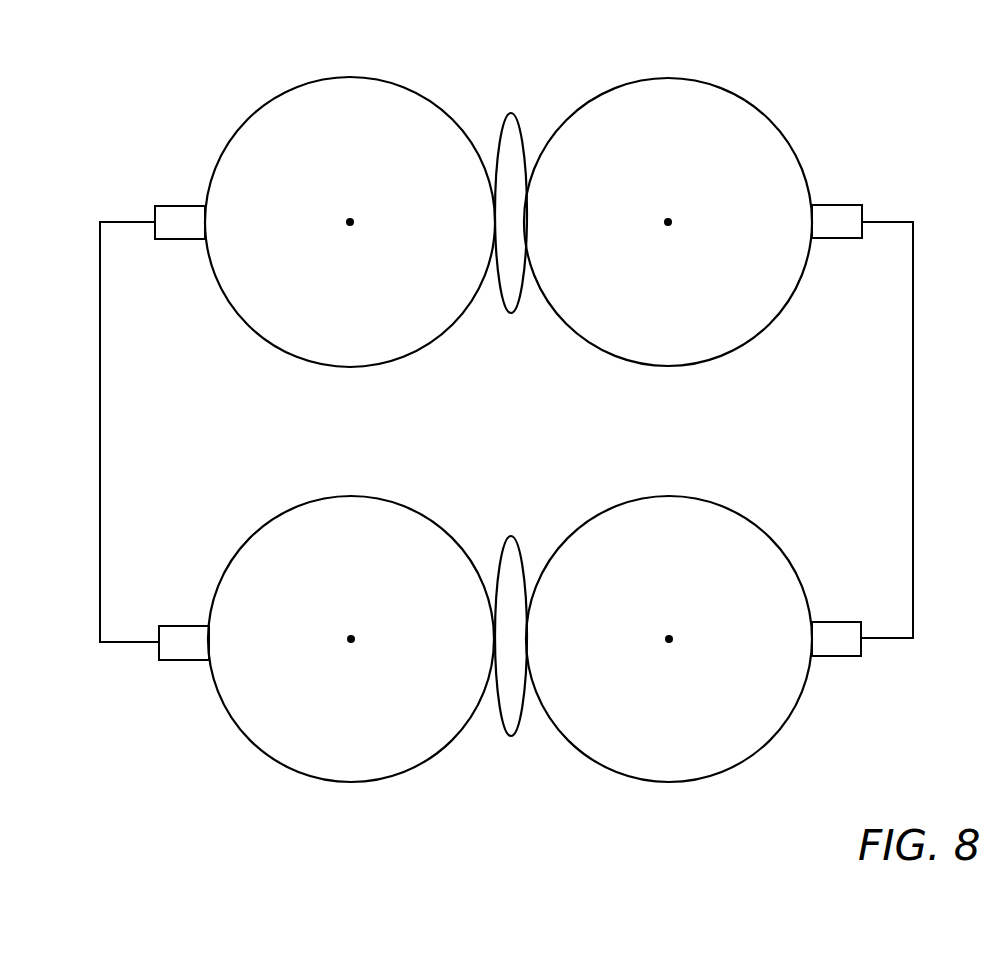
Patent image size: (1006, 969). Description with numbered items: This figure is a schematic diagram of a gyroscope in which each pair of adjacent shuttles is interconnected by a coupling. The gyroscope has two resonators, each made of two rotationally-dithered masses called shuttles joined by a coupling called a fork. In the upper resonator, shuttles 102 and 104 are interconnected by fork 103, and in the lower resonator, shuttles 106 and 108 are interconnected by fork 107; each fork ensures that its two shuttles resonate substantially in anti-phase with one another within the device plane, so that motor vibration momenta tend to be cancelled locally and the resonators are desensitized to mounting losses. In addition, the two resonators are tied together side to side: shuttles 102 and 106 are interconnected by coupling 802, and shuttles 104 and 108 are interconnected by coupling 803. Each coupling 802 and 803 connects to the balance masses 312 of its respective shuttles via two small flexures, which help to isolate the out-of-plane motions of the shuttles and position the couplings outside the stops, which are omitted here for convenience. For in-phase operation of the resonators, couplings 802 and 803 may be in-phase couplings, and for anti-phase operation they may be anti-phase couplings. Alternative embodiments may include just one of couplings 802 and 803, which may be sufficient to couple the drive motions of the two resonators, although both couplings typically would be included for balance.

The shuttle 102 is at (290, 85).
The fork 103 is at (510, 105).
The shuttle 104 is at (760, 107).
The shuttle 106 is at (262, 753).
The fork 107 is at (508, 742).
The shuttle 108 is at (773, 736).
The balance mass 312 is at (170, 203).
The coupling 802 is at (97, 401).
The coupling 803 is at (917, 412).